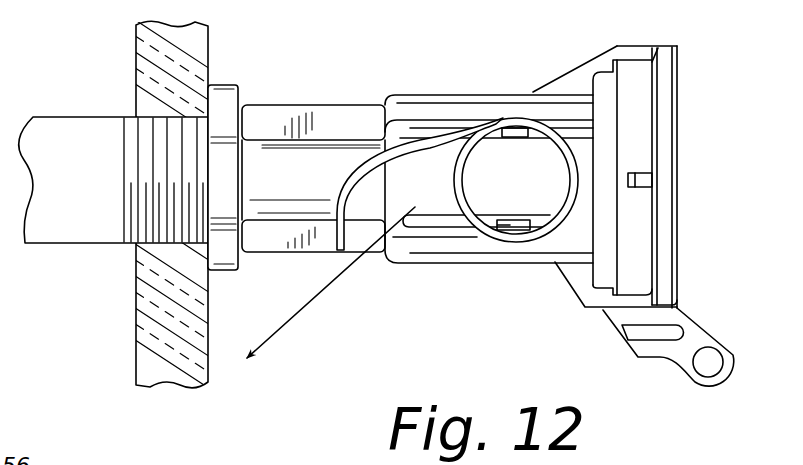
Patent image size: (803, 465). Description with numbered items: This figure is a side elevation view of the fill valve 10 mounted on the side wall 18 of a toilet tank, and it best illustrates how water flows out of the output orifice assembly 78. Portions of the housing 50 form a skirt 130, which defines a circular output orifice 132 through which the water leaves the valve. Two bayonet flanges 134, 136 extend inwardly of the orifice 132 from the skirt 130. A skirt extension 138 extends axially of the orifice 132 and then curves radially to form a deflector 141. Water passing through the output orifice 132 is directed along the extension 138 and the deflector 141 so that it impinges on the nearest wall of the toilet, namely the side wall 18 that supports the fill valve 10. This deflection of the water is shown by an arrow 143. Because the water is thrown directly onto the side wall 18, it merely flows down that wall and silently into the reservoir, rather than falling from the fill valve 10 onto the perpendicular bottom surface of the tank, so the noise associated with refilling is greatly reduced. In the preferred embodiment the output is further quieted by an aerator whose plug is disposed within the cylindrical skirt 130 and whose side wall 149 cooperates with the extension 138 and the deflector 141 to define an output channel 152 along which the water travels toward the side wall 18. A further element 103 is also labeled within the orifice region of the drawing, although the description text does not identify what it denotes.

The fill valve 10 is at (667, 33).
The side wall 18 is at (165, 297).
The housing 50 is at (270, 115).
The output orifice assembly 78 is at (478, 127).
The clip ring interior 103 is at (543, 197).
The skirt 130 is at (560, 145).
The output orifice 132 is at (537, 138).
The bayonet flange 134 is at (510, 128).
The bayonet flange 136 is at (497, 218).
The skirt extension 138 is at (413, 143).
The deflector 141 is at (340, 230).
The arrow 143 is at (315, 290).
The side wall 149 is at (119, 452).
The output channel 152 is at (405, 178).